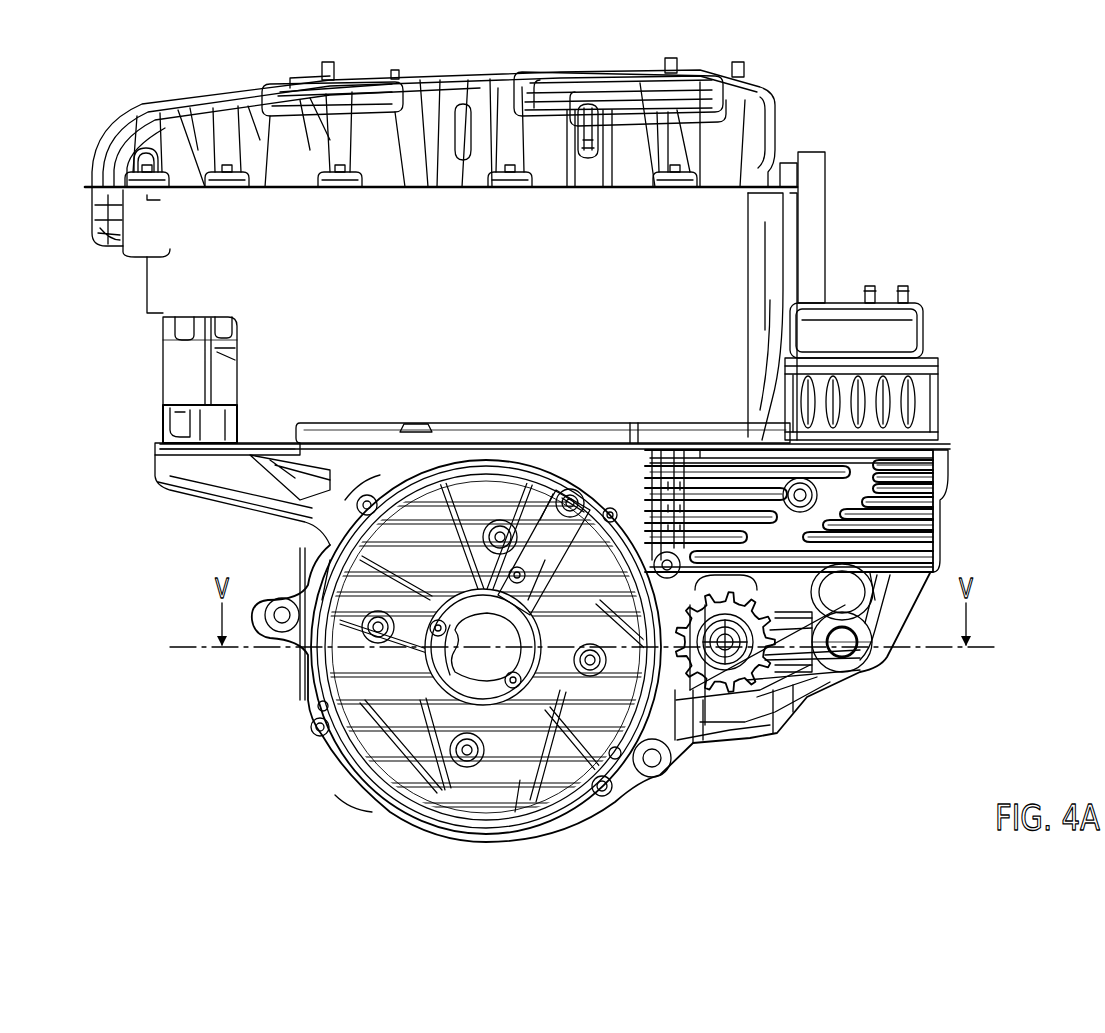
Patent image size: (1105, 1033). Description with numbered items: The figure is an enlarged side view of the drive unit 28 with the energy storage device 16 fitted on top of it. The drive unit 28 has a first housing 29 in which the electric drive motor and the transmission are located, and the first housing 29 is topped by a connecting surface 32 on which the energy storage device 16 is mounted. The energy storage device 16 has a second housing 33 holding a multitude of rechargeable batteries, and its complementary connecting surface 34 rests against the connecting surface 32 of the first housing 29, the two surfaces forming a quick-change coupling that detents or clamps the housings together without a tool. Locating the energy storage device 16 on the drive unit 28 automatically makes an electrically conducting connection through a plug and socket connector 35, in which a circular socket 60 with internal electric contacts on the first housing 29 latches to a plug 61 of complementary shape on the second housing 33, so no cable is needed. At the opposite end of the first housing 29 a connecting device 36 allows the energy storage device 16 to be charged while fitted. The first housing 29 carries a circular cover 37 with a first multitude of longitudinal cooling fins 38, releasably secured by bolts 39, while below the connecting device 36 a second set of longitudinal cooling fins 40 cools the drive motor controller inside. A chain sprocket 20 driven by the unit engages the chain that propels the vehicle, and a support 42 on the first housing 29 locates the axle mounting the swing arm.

The energy storage device 16 is at (124, 325).
The second housing 33 is at (770, 153).
The connecting device 36 is at (915, 330).
The plug and socket connector 35 is at (175, 364).
The plug 61 is at (180, 372).
The circular socket 60 is at (170, 418).
The complementary connecting surface 34 is at (160, 443).
The connecting surface 32 is at (158, 466).
The second set of longitudinal cooling fins 40 is at (938, 545).
The support 42 is at (848, 655).
The first housing 29 is at (800, 715).
The chain sprocket 20 is at (735, 690).
The drive unit 28 is at (265, 728).
The circular cover 37 is at (342, 772).
The first multitude of longitudinal cooling fins 38 is at (437, 790).
The bolts 39 is at (604, 797).